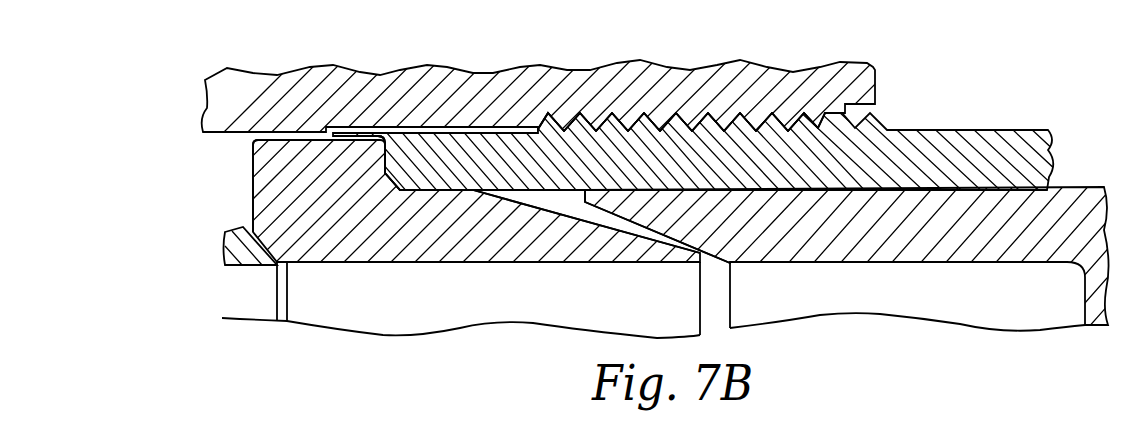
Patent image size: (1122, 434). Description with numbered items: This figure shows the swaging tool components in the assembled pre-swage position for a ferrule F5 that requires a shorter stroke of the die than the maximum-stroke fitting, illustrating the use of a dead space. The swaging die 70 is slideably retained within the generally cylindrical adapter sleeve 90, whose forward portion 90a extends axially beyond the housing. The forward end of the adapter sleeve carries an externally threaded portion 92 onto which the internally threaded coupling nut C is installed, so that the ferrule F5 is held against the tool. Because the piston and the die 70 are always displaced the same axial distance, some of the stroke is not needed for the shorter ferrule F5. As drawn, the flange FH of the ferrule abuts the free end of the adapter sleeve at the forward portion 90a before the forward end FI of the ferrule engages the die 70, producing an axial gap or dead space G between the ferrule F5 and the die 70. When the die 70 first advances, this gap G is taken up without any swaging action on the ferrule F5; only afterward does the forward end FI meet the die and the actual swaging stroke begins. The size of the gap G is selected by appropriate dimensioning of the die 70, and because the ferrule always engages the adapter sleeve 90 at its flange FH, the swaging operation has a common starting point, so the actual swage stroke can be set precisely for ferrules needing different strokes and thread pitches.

The coupling nut C is at (628, 88).
The externally threaded portion 92 is at (814, 115).
The adapter sleeve 90 is at (963, 147).
The forward portion of adapter sleeve 90a is at (403, 175).
The ferrule flange FH is at (400, 174).
The swaging die 70 is at (975, 237).
The ferrule F5 is at (338, 228).
The forward end of ferrule FI is at (688, 260).
The axial gap (dead space) G is at (710, 266).